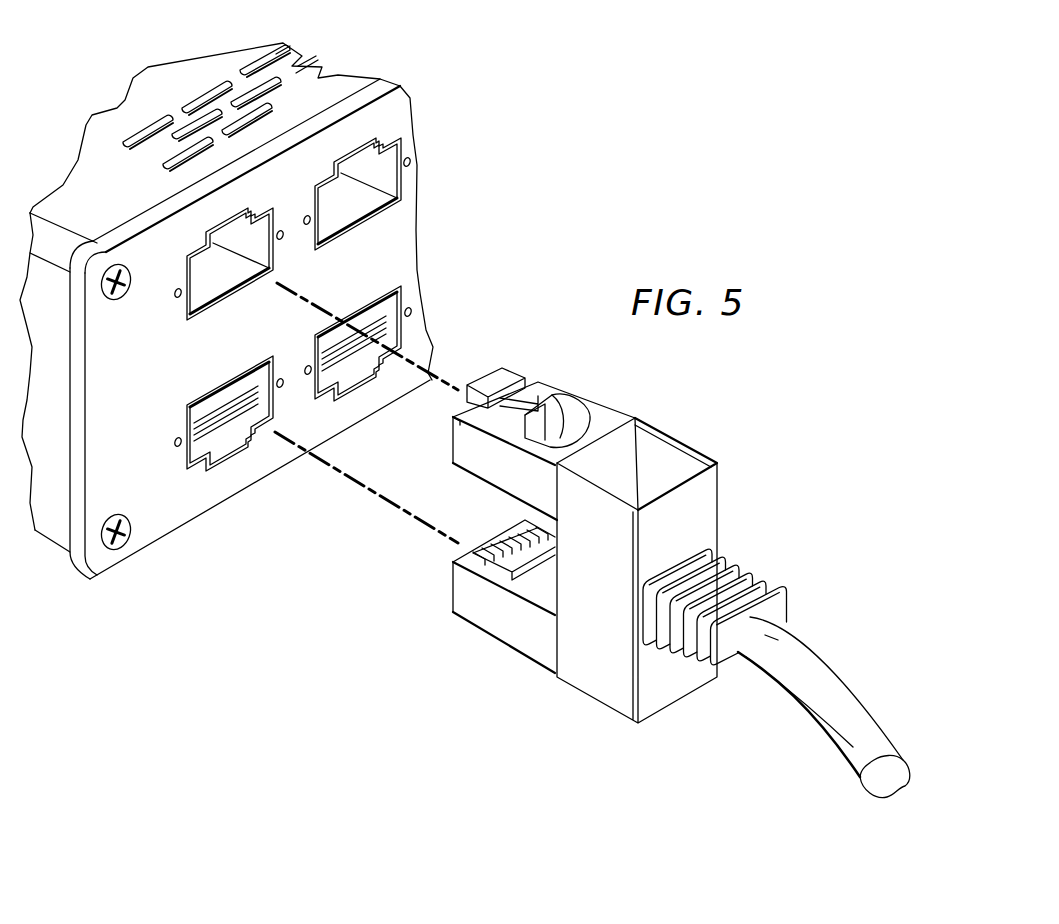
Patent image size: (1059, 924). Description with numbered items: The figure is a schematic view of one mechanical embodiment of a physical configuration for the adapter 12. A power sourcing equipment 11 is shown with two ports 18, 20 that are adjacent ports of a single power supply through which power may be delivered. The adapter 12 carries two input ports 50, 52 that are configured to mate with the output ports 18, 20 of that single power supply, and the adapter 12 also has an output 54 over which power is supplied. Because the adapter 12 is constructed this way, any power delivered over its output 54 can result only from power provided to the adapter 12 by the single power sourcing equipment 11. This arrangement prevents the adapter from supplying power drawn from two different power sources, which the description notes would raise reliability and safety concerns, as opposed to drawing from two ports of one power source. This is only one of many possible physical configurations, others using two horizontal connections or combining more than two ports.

The power sourcing equipment 11 is at (241, 307).
The adapter 12 is at (681, 566).
The port 18 is at (206, 283).
The port 20 is at (250, 393).
The input port 50 is at (539, 384).
The input port 52 is at (503, 642).
The output 54 is at (836, 668).